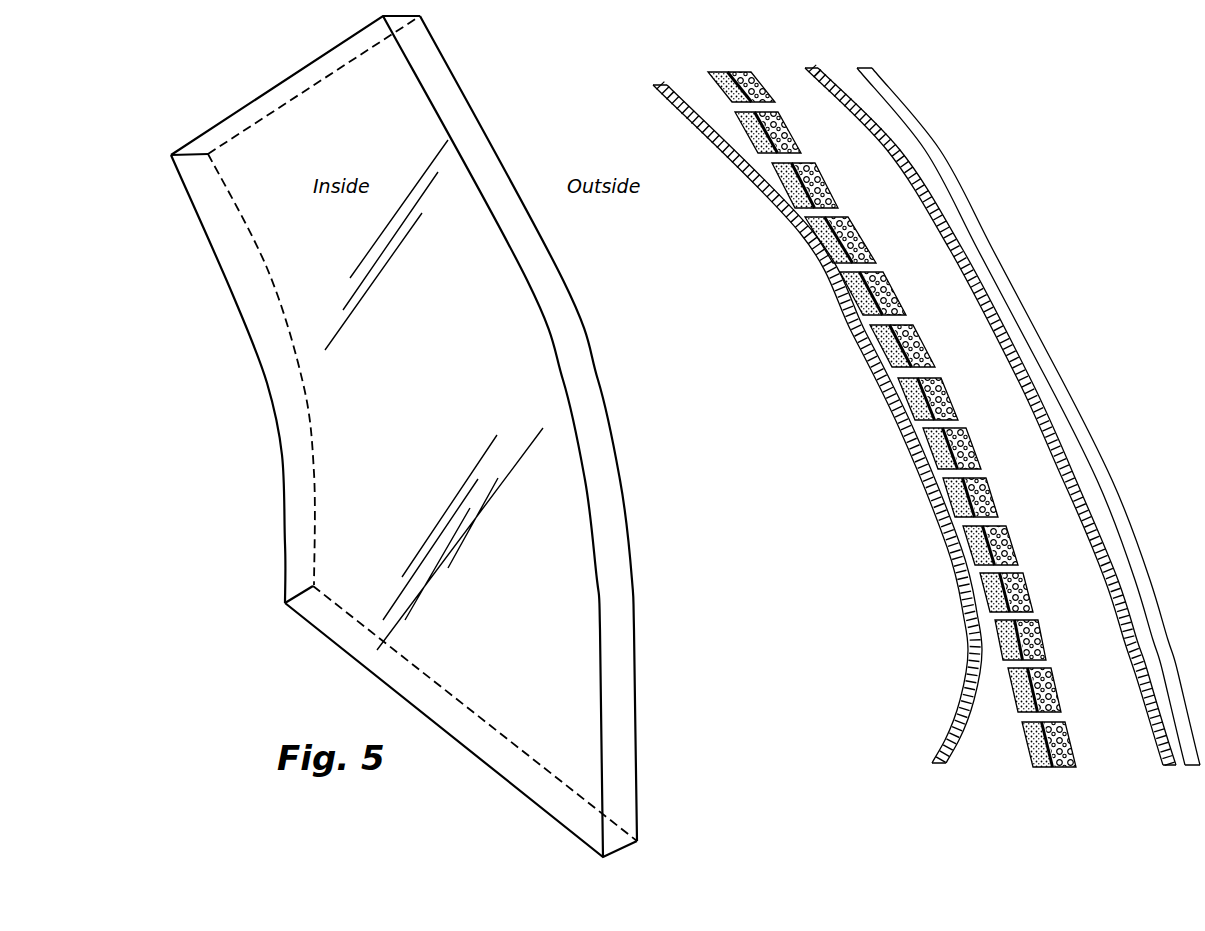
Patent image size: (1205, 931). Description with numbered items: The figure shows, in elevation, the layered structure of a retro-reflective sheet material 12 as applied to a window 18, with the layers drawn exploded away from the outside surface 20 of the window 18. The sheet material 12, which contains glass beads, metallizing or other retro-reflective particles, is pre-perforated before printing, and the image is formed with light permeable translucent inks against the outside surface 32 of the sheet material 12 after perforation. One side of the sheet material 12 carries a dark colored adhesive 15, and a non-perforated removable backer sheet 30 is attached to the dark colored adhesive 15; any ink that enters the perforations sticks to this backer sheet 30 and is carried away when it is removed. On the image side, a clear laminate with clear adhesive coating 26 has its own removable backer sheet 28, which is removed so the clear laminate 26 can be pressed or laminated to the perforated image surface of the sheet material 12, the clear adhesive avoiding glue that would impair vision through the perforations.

The retro-reflective sheet material 12 is at (887, 418).
The dark colored adhesive 15 is at (1028, 770).
The window 18 is at (431, 450).
The outside surface 20 is at (628, 272).
The clear laminate with clear adhesive coating 26 is at (1108, 473).
The removable backer sheet 28 is at (1163, 768).
The non-perforated removable backer sheet 30 is at (852, 345).
The outside surface of sheet material 32 is at (1002, 445).